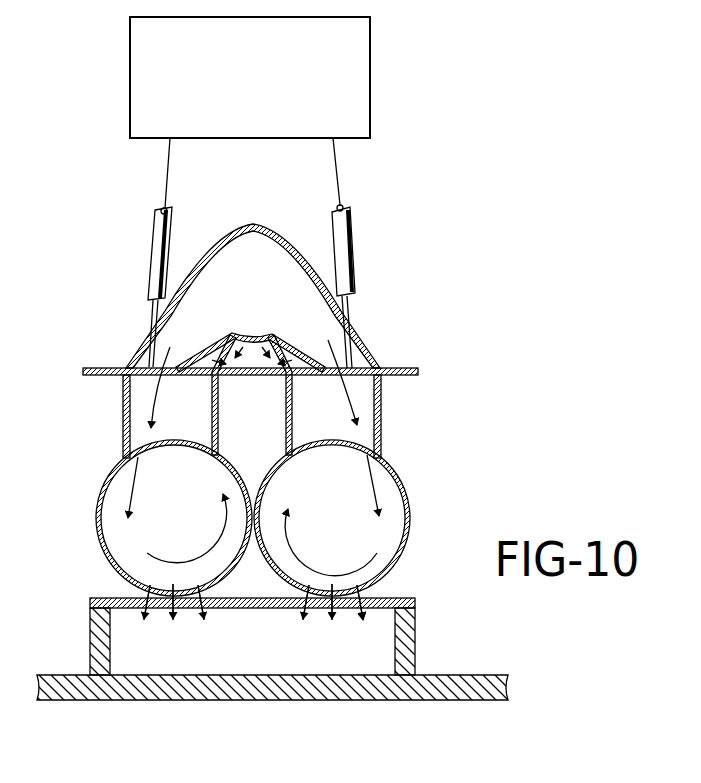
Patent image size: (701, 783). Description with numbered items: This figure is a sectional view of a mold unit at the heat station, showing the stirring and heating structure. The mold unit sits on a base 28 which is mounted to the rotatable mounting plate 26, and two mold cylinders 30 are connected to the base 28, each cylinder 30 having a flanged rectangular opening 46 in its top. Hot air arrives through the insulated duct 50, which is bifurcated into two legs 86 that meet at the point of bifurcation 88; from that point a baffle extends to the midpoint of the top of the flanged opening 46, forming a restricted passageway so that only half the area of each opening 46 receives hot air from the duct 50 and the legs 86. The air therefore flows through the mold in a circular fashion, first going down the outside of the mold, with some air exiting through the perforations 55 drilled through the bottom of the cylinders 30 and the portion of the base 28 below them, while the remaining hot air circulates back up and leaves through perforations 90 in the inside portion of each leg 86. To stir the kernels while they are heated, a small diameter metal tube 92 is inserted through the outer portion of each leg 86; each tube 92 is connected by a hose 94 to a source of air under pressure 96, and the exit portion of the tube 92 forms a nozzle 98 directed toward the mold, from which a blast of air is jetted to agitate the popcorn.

The source of air under pressure 96 is at (246, 127).
The hose 94 is at (172, 210).
The small diameter metal tube 92 is at (150, 326).
The legs 86 is at (200, 268).
The insulated duct 50 is at (258, 267).
The point of bifurcation 88 is at (256, 334).
The perforations 90 is at (232, 365).
The nozzle 98 is at (150, 368).
The flanged rectangular opening 46 is at (123, 426).
The mold cylinder 30 is at (96, 548).
The perforations 55 is at (177, 622).
The base 28 is at (90, 646).
The mounting plate 26 is at (238, 701).